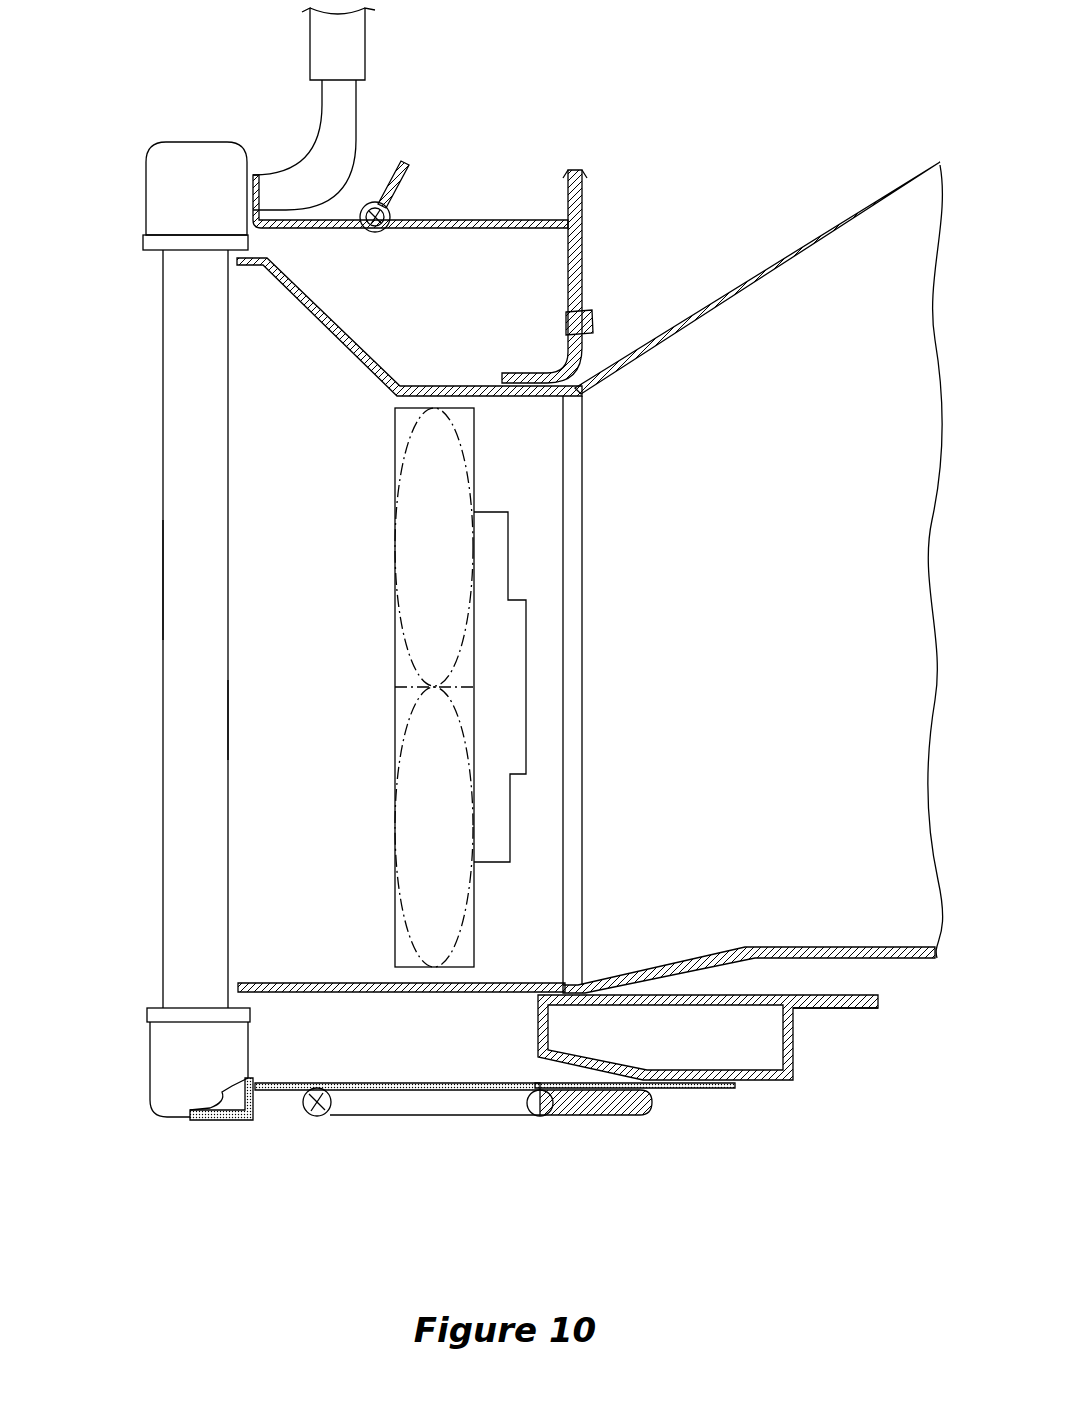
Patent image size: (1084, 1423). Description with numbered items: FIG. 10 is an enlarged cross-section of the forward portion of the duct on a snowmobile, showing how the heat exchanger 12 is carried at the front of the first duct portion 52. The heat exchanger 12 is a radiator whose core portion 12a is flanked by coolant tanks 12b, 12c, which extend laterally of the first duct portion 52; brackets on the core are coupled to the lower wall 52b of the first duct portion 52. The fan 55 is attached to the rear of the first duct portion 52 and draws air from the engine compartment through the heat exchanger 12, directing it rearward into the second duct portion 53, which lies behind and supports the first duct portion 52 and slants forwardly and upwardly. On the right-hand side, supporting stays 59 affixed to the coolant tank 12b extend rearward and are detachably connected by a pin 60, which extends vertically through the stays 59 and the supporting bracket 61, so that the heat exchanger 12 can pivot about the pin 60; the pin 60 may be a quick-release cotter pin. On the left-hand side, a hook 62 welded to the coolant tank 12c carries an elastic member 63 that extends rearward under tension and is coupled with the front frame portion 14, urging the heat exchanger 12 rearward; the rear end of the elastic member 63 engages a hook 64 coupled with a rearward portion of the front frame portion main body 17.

The heat exchanger 12 is at (163, 450).
The core portion 12a is at (163, 578).
The coolant tank 12b is at (163, 198).
The coolant tank 12c is at (160, 1052).
The front frame portion 14 is at (785, 1083).
The front frame portion main body 17 is at (760, 1082).
The first duct portion 52 is at (387, 995).
The lower wall 52b is at (250, 713).
The second duct portion 53 is at (775, 258).
The fan 55 is at (395, 730).
The supporting stays 59 is at (333, 221).
The pin 60 is at (375, 233).
The supporting bracket 61 is at (500, 221).
The hook 62 is at (313, 1120).
The elastic member 63 is at (452, 1117).
The hook 64 is at (547, 1120).